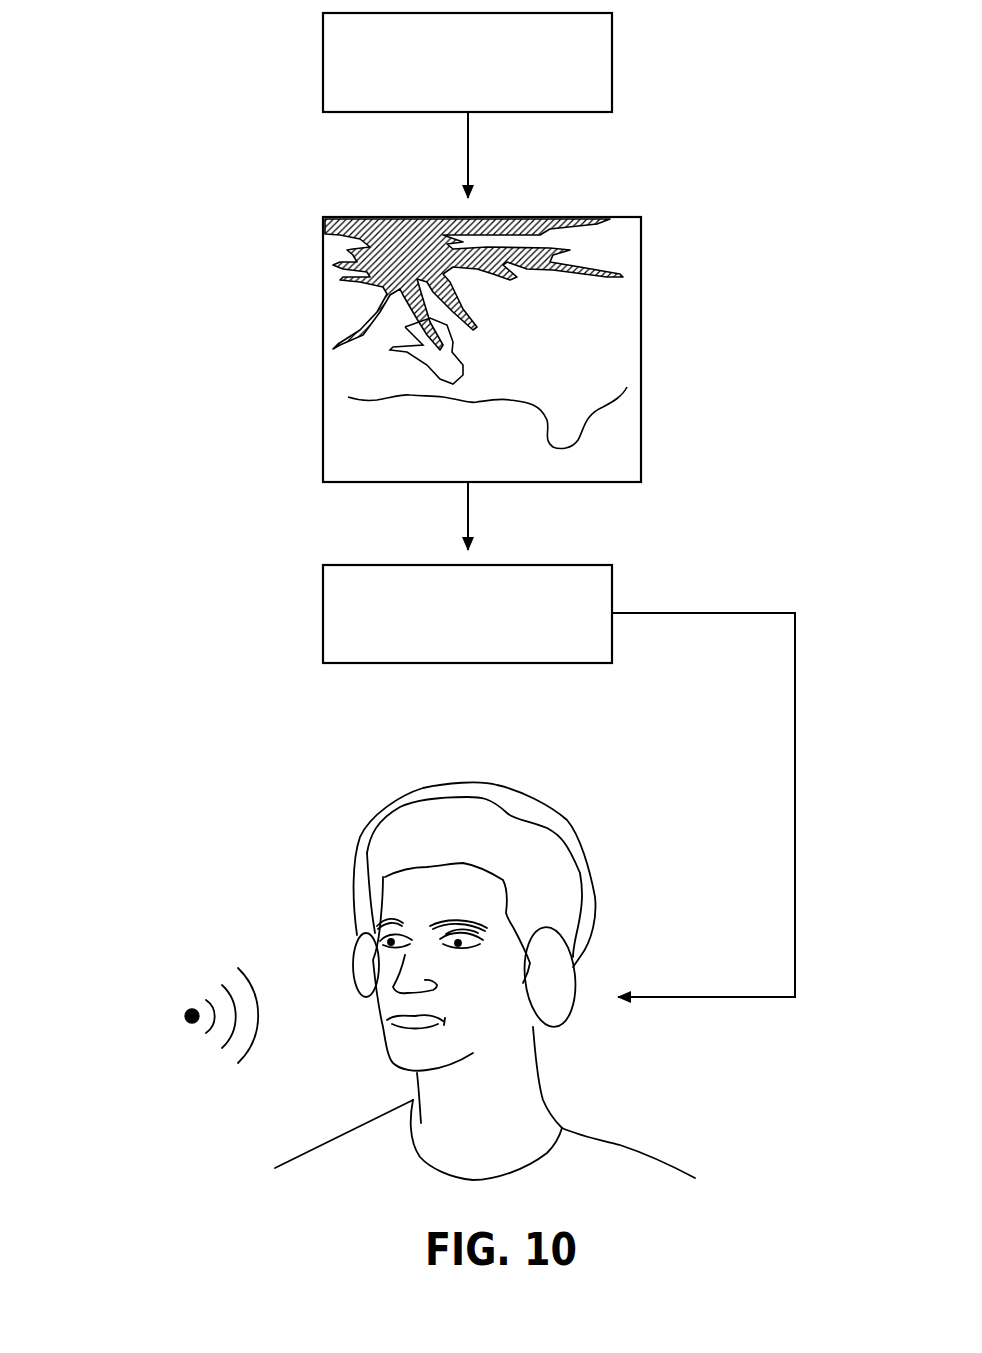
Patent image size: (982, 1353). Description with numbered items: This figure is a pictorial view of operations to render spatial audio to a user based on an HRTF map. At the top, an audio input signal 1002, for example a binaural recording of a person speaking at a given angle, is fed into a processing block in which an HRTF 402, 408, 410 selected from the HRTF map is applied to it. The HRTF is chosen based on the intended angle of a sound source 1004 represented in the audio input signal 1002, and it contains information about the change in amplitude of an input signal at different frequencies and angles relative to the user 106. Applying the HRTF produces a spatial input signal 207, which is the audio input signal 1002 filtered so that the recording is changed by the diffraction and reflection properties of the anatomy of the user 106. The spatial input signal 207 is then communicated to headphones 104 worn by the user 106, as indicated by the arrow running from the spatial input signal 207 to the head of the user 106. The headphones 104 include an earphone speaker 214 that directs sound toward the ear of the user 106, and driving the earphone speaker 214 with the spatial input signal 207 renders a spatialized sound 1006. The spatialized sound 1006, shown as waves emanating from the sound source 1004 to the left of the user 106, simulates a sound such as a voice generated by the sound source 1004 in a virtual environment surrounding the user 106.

The audio input signal 1002 is at (612, 33).
The HRTF 402 is at (564, 349).
The HRTF 408 is at (564, 349).
The HRTF 410 is at (641, 318).
The spatial input signal 207 is at (323, 582).
The headphones 104 is at (619, 969).
The earphone speaker 214 is at (557, 987).
The user 106 is at (623, 1143).
The sound source 1004 is at (188, 1010).
The spatialized sound 1006 is at (248, 1052).